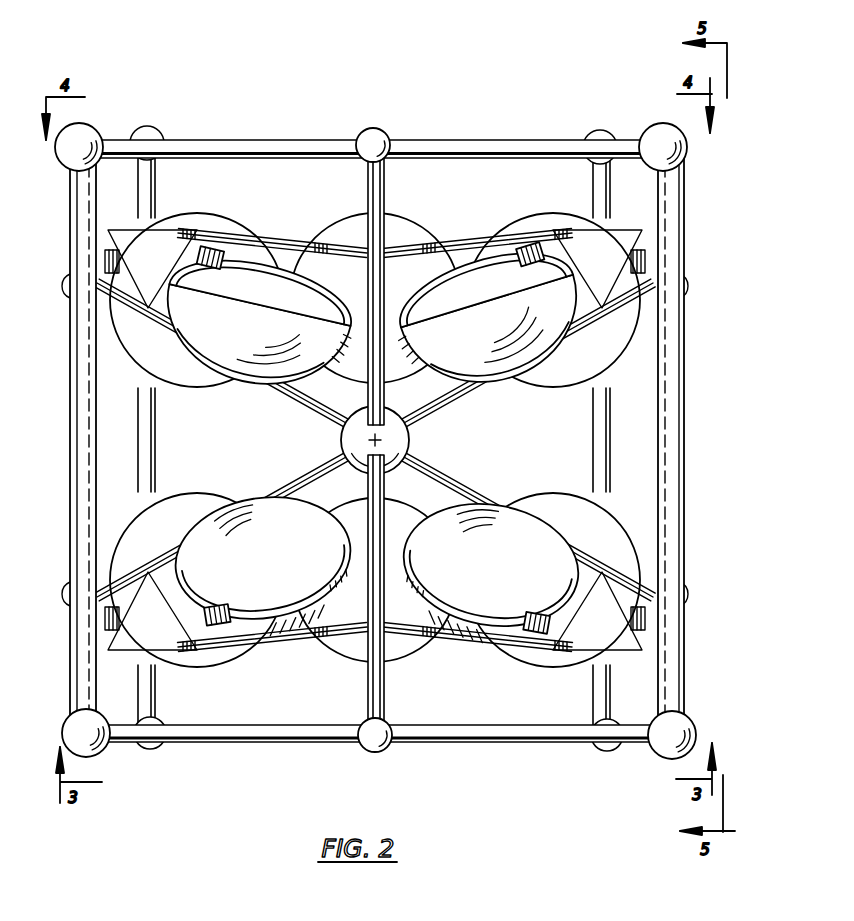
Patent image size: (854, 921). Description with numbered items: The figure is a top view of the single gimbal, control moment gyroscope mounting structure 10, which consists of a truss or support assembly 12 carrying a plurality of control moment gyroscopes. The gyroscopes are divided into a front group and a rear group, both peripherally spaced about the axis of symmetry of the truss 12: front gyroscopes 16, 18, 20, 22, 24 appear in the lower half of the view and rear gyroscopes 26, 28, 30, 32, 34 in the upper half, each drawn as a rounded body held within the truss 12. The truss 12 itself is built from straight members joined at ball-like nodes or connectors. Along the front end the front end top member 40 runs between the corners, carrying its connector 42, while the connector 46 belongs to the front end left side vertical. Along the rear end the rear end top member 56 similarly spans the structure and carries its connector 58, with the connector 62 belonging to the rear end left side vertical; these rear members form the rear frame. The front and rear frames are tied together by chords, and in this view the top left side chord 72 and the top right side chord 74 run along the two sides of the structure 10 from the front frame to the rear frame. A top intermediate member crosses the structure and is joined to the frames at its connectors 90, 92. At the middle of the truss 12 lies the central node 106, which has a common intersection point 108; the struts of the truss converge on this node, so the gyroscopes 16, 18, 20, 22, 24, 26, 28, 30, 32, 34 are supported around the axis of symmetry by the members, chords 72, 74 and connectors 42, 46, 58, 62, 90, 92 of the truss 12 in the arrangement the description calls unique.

The mounting structure 10 is at (456, 40).
The truss 12 is at (375, 444).
The control moment gyroscope 16 is at (356, 668).
The control moment gyroscope 18 is at (185, 668).
The control moment gyroscope 20 is at (263, 668).
The control moment gyroscope 22 is at (482, 668).
The control moment gyroscope 24 is at (580, 663).
The control moment gyroscope 26 is at (353, 214).
The control moment gyroscope 28 is at (178, 214).
The control moment gyroscope 30 is at (263, 214).
The control moment gyroscope 32 is at (485, 214).
The control moment gyroscope 34 is at (563, 215).
The front end top member 40 is at (240, 745).
The connector 42 is at (663, 745).
The connector 46 is at (105, 752).
The rear end top member 56 is at (244, 140).
The connector 58 is at (651, 128).
The connector 62 is at (100, 133).
The top left side chord 72 is at (68, 432).
The top right side chord 74 is at (685, 410).
The connector 90 is at (368, 750).
The connector 92 is at (374, 128).
The central node 106 is at (414, 440).
The common intersection point 108 is at (414, 437).